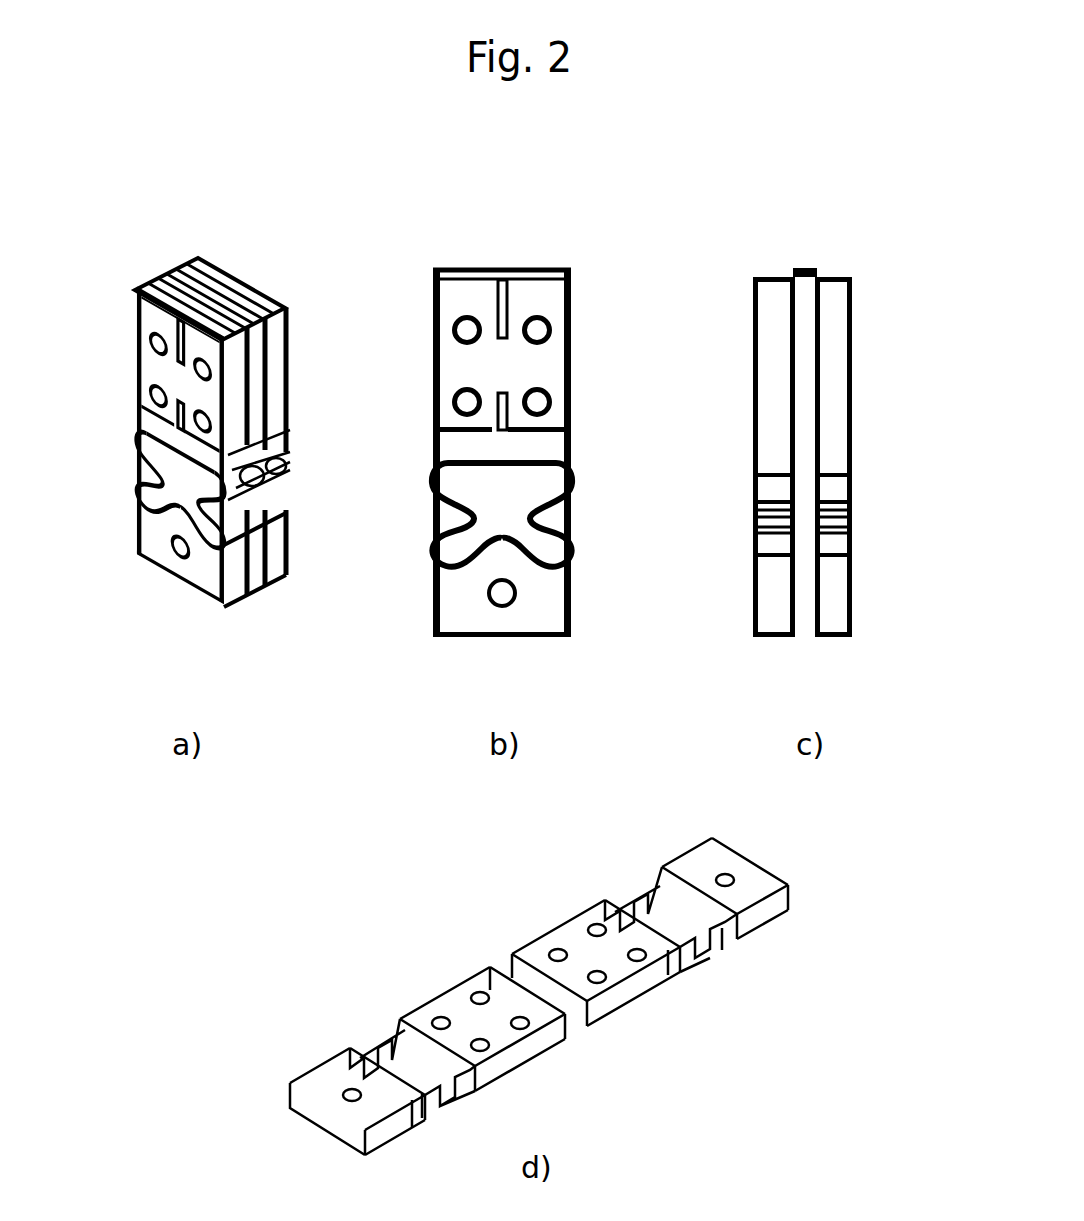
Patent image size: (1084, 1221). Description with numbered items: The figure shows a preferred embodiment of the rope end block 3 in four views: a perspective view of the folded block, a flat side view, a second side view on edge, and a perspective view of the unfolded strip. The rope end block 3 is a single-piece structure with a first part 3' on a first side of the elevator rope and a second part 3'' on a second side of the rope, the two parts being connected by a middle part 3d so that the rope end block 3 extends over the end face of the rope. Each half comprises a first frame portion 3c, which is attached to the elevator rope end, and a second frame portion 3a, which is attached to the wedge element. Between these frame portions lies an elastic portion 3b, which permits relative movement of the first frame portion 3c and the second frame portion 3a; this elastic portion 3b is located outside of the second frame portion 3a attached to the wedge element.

The rope end block 3 is at (461, 676).
The second frame portion 3a is at (458, 583).
The elastic portion 3b is at (448, 502).
The first frame portion 3c is at (540, 357).
The middle part 3d is at (795, 262).
The first part 3' is at (745, 457).
The second part 3'' is at (870, 457).